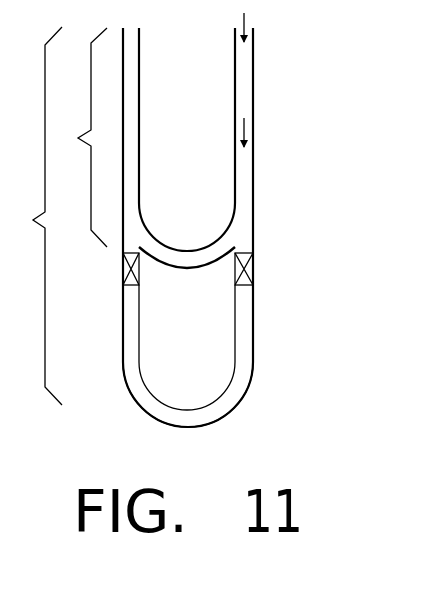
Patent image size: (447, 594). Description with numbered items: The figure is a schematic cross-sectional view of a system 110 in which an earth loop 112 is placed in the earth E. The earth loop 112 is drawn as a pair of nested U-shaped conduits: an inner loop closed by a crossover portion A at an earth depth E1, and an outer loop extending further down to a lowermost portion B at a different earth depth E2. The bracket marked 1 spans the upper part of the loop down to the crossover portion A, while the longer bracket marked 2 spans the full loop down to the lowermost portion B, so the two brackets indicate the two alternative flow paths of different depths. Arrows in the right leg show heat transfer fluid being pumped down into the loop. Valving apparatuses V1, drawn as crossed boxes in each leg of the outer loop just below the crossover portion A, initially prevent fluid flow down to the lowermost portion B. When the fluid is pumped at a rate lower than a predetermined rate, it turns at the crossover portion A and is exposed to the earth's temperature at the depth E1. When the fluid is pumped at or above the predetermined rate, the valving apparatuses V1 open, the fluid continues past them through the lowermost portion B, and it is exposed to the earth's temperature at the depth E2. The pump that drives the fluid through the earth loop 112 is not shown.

The system 110 is at (215, 220).
The earth loop 112 is at (253, 348).
The first section 1 is at (83, 137).
The second section 2 is at (35, 216).
The valving apparatuses V1 is at (123, 268).
The earth depth E1 is at (187, 139).
The earth depth E2 is at (187, 347).
The earth E is at (310, 179).
The crossover portion A is at (188, 251).
The lowermost portion B is at (190, 409).